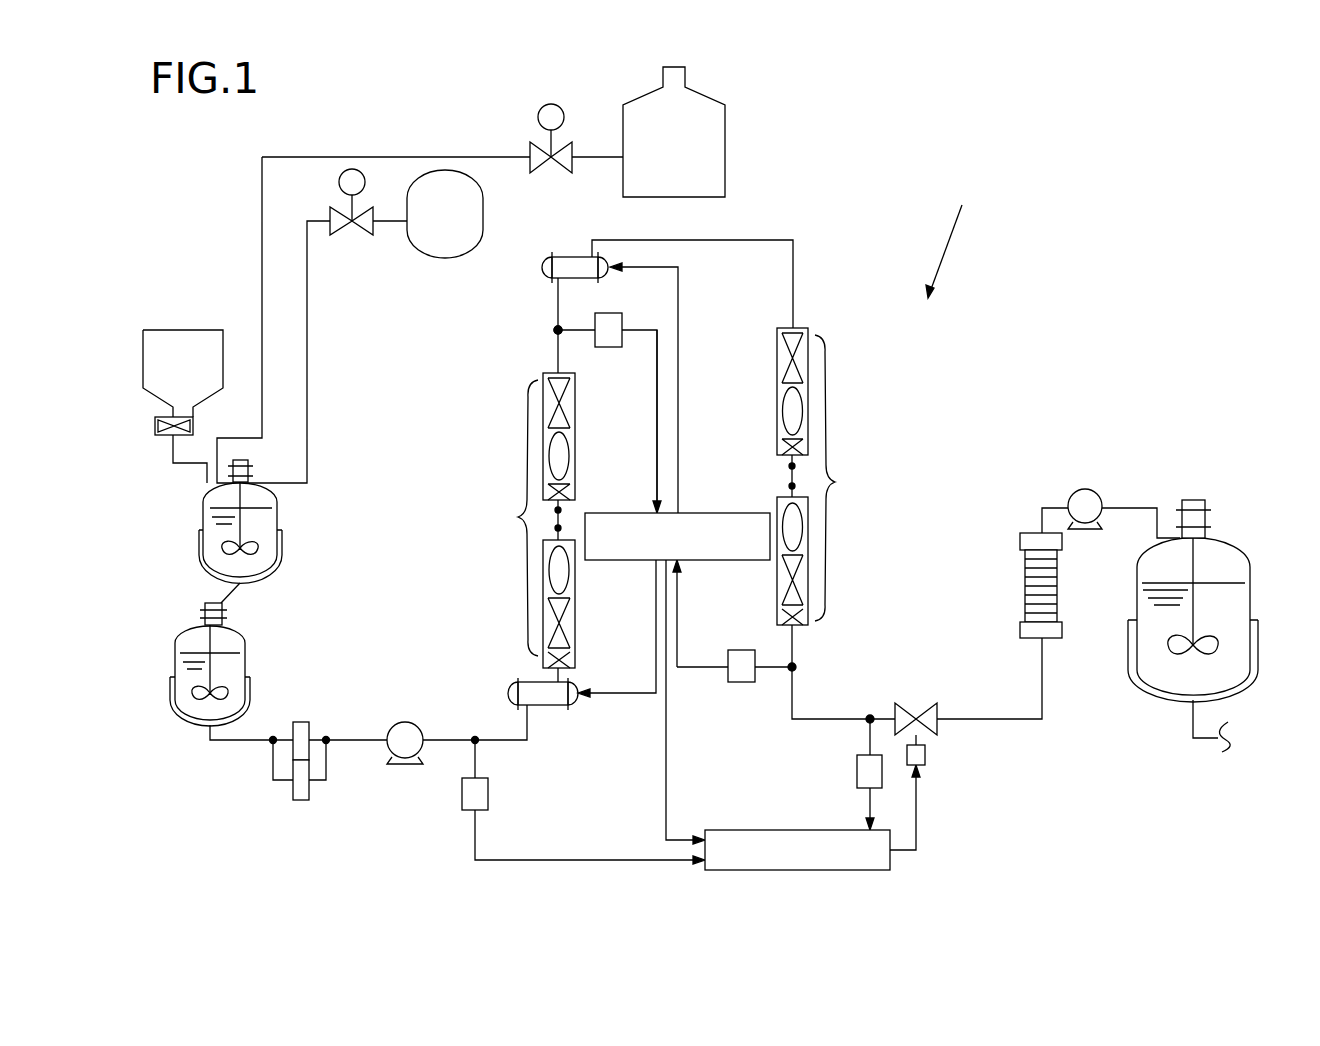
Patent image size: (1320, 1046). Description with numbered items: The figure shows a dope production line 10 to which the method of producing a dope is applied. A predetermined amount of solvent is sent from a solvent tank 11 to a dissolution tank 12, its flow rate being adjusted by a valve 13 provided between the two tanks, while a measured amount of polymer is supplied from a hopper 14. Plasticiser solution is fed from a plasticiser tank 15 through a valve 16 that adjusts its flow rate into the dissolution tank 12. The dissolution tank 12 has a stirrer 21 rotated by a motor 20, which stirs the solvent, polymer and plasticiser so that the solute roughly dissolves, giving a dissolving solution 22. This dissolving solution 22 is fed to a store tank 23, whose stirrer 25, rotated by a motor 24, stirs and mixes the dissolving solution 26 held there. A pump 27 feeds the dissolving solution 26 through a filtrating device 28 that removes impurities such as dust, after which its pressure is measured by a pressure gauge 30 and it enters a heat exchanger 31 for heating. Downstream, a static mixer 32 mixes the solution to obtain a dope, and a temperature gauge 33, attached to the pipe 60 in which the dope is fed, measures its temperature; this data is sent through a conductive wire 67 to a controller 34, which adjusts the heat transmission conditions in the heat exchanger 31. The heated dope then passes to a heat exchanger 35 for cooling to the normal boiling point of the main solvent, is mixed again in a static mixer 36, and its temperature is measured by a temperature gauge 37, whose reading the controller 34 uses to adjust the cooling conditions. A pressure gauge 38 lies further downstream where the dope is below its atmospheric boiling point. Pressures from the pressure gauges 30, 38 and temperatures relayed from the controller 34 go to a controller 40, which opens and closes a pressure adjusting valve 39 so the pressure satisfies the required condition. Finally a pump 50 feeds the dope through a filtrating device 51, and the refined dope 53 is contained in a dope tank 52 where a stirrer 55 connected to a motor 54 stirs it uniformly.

The dope production line 10 is at (951, 233).
The solvent tank 11 is at (725, 135).
The dissolution tank 12 is at (203, 524).
The valve 13 is at (572, 147).
The hopper 14 is at (148, 328).
The plasticiser tank 15 is at (442, 257).
The valve 16 is at (363, 235).
The motor 20 is at (242, 458).
The stirrer 21 is at (243, 522).
The dissolving solution 22 is at (222, 560).
The store tank 23 is at (175, 663).
The motor 24 is at (205, 612).
The stirrer 25 is at (197, 683).
The dissolving solution 26 is at (228, 680).
The pump 27 is at (410, 765).
The filtrating device 28 is at (300, 790).
The pressure gauge 30 is at (488, 792).
The heat exchanger 31 is at (548, 705).
The static mixer 32 is at (526, 520).
The temperature gauge 33 is at (608, 313).
The controller 34 is at (720, 513).
The heat exchanger 35 is at (566, 257).
The static mixer 36 is at (825, 476).
The temperature gauge 37 is at (742, 682).
The pressure gauge 38 is at (857, 772).
The pressure adjusting valve 39 is at (920, 712).
The controller 40 is at (890, 862).
The pump 50 is at (1080, 503).
The filtrating device 51 is at (1025, 585).
The dope tank 52 is at (1252, 590).
The refined dope 53 is at (1162, 672).
The motor 54 is at (1190, 520).
The stirrer 55 is at (1210, 650).
The pipe 60 is at (558, 340).
The conductive wire 67 is at (657, 393).